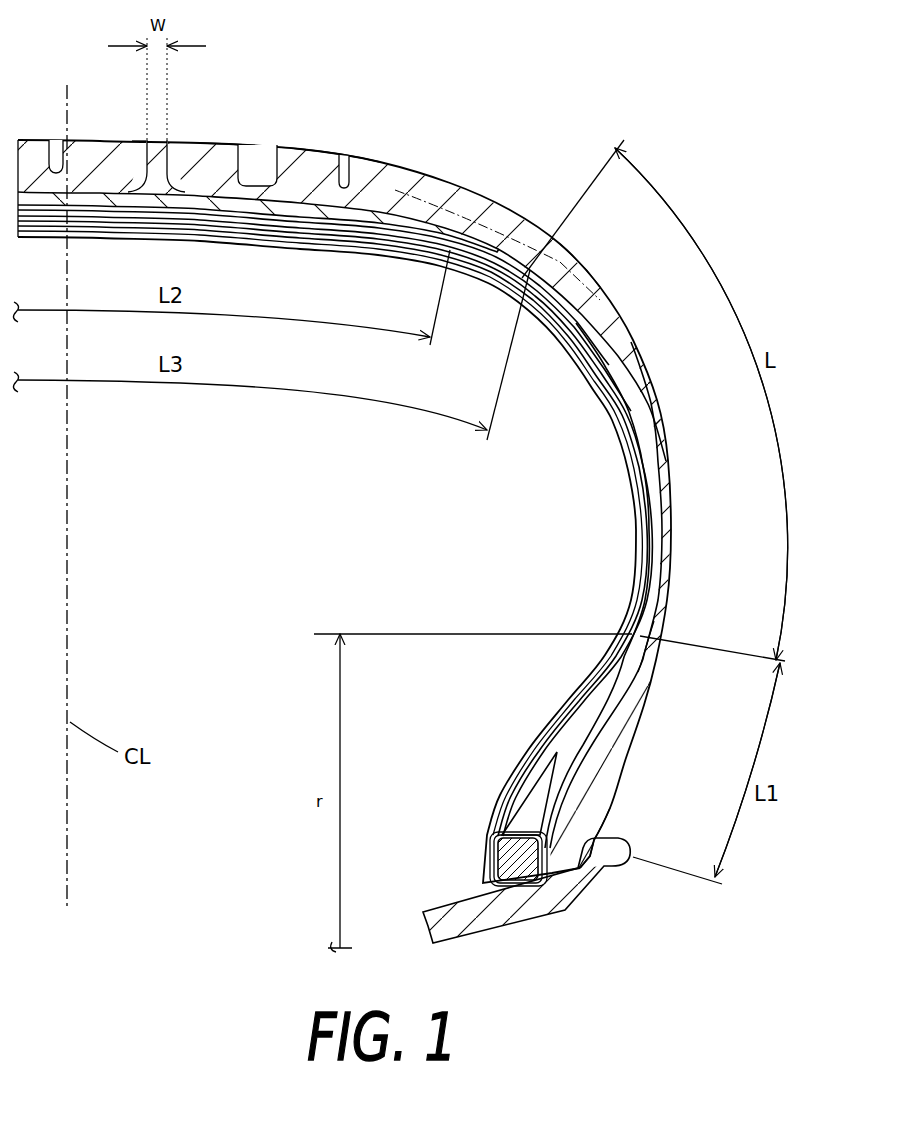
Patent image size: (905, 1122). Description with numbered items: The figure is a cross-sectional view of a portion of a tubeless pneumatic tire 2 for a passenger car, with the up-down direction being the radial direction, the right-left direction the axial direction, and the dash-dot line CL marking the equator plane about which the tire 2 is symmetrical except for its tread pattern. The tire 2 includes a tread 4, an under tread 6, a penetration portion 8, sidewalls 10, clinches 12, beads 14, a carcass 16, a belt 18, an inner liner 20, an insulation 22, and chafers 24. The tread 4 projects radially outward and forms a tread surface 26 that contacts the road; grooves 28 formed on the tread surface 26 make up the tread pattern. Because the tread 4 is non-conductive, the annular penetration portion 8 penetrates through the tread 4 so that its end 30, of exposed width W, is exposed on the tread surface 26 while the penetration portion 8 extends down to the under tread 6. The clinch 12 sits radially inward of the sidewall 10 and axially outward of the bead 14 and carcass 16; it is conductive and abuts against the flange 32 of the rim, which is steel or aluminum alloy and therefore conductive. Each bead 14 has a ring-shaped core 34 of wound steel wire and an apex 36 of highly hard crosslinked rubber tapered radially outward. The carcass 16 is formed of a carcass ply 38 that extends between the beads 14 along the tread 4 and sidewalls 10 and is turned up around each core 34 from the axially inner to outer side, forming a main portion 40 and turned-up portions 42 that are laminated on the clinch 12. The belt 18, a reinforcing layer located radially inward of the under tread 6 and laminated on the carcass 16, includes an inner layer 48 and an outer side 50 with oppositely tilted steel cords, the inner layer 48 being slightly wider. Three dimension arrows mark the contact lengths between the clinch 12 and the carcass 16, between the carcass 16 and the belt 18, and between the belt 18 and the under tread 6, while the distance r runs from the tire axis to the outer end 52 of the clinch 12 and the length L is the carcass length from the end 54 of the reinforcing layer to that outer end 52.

The pneumatic tire 2 is at (666, 82).
The tread 4 is at (100, 170).
The under tread 6 is at (362, 215).
The penetration portion 8 is at (148, 160).
The sidewall 10 is at (668, 420).
The clinch 12 is at (612, 768).
The bead 14 is at (465, 819).
The carcass 16 is at (627, 380).
The belt 18 is at (313, 225).
The inner liner 20 is at (335, 534).
The insulation 22 is at (660, 543).
The chafer 24 is at (482, 880).
The tread surface 26 is at (302, 142).
The groove 28 is at (57, 150).
The end of penetration portion 30 is at (165, 140).
The flange 32 is at (598, 878).
The core 34 is at (492, 853).
The apex 36 is at (516, 797).
The carcass ply 38 is at (620, 410).
The main portion 40 is at (556, 722).
The turned-up portion 42 is at (667, 540).
The inner layer 48 is at (512, 262).
The outer side 50 is at (473, 247).
The outer end of clinch 52 is at (643, 632).
The end of reinforcing layer 54 is at (558, 268).